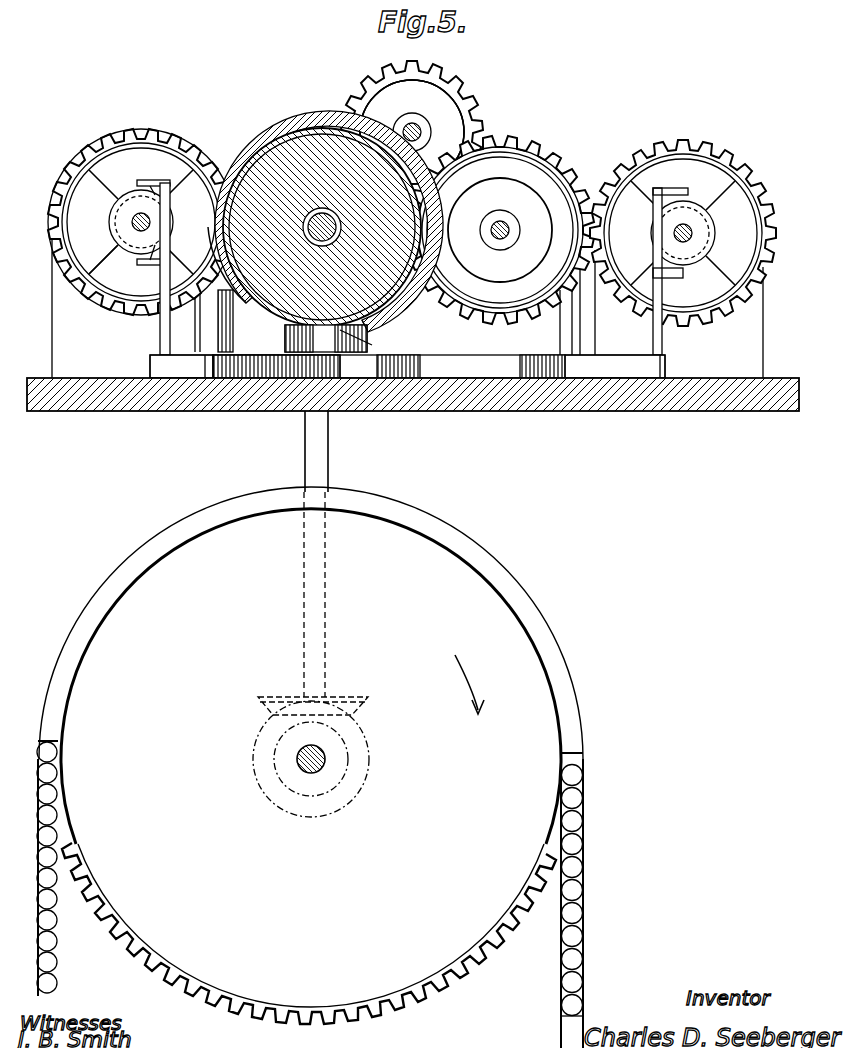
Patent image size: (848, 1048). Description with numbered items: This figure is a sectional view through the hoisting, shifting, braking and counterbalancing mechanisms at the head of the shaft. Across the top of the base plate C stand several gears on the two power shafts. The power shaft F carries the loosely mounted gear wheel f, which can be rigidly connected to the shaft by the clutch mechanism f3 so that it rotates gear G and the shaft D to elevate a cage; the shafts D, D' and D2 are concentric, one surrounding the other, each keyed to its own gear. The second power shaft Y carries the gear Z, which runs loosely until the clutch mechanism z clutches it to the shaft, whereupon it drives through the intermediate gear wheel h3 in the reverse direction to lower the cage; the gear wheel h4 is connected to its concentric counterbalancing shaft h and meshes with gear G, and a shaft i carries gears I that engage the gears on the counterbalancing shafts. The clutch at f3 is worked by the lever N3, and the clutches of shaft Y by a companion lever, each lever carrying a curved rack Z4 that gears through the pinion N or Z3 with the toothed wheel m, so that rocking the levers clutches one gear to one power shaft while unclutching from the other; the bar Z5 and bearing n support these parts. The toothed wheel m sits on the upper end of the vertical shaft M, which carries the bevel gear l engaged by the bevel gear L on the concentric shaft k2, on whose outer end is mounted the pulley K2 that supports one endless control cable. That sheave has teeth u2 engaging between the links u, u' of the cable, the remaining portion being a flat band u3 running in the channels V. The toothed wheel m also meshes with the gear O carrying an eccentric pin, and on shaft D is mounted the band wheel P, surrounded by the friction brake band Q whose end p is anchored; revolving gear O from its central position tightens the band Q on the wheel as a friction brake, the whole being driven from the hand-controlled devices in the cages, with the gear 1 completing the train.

The friction brake band Q is at (397, 132).
The gear body 1 is at (468, 118).
The gears I is at (468, 118).
The shaft i is at (412, 124).
The concentric shaft h is at (500, 230).
The gear wheel h4 is at (488, 310).
The gear wheel h3 is at (545, 306).
The power shaft F is at (130, 221).
The gear wheel f is at (128, 140).
The clutch mechanism f3 is at (136, 262).
The bearing bracket n is at (150, 422).
The lever N3 is at (160, 325).
The gear Z is at (712, 148).
The power shaft Y is at (692, 233).
The clutch mechanism z is at (742, 178).
The band wheel P is at (280, 130).
The ring segment end p is at (250, 168).
The shaft D is at (322, 227).
The shaft D' is at (301, 237).
The shaft D2 is at (338, 229).
The rack bar Z4 is at (414, 392).
The pinion N is at (190, 378).
The toothed wheel m is at (248, 378).
The gear O is at (326, 324).
The pinion Z3 is at (380, 352).
The rack bar end Z5 is at (497, 378).
The base plate C is at (468, 350).
The vertical shaft M is at (328, 455).
The pulley K2 is at (524, 596).
The teeth u2 is at (309, 933).
The ball channel V is at (57, 868).
The link u is at (585, 900).
The link u' is at (587, 890).
The flat band u3 is at (578, 1036).
The bevel gear L is at (363, 778).
The concentric shaft k2 is at (330, 790).
The bevel gear l is at (350, 700).